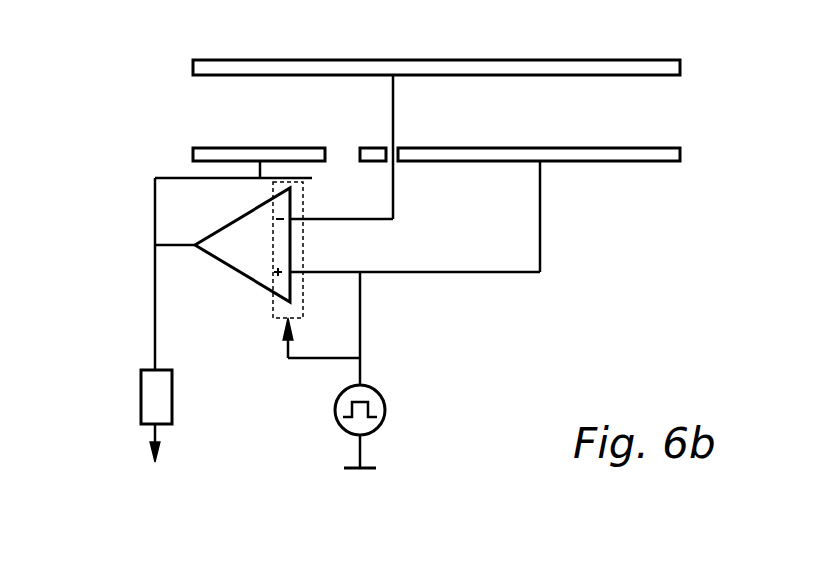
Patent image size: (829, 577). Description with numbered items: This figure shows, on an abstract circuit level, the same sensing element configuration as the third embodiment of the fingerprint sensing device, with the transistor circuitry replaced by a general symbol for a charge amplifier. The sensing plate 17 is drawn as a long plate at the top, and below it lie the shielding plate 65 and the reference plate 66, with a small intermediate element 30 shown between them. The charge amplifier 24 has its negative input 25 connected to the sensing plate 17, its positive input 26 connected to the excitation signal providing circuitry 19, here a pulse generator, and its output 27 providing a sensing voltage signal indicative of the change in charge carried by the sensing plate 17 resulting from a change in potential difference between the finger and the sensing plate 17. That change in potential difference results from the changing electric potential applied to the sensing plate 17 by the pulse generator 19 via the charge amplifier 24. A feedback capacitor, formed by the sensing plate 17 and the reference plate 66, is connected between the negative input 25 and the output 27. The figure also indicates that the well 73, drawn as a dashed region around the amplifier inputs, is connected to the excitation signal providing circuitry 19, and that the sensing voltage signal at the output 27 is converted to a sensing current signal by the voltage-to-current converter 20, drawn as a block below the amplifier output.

The sensing plate 17 is at (535, 70).
The shielding plate 65 is at (598, 153).
The reference plate 66 is at (193, 155).
The connection conductor 30 is at (316, 180).
The operational amplifier 24 is at (245, 283).
The output 27 is at (195, 242).
The negative input 25 is at (290, 219).
The positive input 26 is at (292, 274).
The well 73 is at (275, 320).
The excitation signal providing circuitry 19 is at (378, 392).
The voltage-to-current converter 20 is at (122, 398).